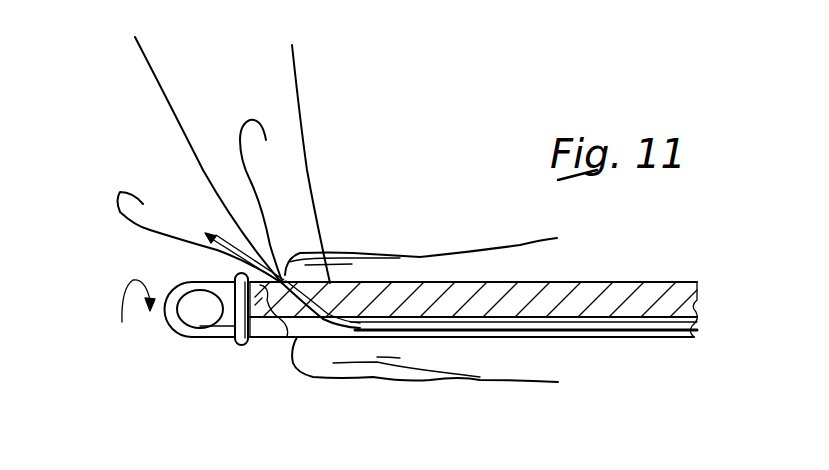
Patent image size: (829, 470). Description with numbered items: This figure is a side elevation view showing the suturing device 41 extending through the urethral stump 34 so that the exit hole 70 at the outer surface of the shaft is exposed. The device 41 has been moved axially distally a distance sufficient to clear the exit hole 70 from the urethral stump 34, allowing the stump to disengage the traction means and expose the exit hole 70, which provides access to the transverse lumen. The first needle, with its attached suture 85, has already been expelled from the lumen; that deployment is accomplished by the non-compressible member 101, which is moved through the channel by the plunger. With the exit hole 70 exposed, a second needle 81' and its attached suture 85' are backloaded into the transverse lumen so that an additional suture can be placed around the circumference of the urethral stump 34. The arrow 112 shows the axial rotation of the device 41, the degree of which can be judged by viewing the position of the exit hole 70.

The suturing device 41 is at (183, 346).
The arrow 112 is at (118, 309).
The exit hole 70 is at (277, 287).
The non-compressible member 101 is at (412, 325).
The urethral stump 34 is at (306, 353).
The suture 85 is at (421, 164).
The suture 85' is at (208, 160).
The second needle 81' is at (201, 211).